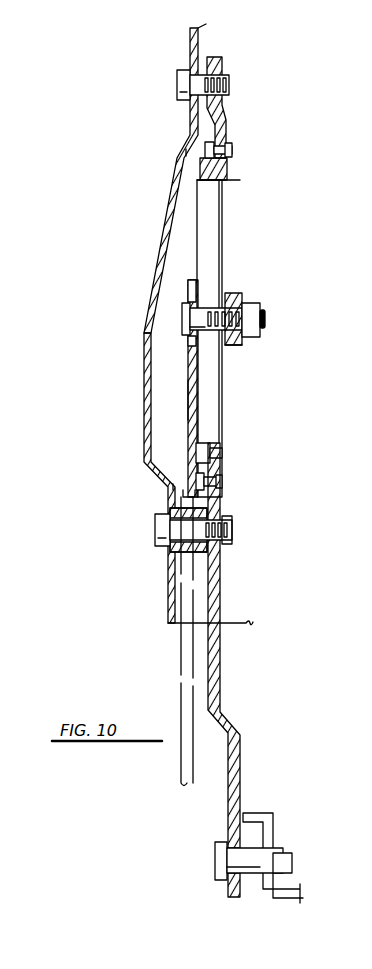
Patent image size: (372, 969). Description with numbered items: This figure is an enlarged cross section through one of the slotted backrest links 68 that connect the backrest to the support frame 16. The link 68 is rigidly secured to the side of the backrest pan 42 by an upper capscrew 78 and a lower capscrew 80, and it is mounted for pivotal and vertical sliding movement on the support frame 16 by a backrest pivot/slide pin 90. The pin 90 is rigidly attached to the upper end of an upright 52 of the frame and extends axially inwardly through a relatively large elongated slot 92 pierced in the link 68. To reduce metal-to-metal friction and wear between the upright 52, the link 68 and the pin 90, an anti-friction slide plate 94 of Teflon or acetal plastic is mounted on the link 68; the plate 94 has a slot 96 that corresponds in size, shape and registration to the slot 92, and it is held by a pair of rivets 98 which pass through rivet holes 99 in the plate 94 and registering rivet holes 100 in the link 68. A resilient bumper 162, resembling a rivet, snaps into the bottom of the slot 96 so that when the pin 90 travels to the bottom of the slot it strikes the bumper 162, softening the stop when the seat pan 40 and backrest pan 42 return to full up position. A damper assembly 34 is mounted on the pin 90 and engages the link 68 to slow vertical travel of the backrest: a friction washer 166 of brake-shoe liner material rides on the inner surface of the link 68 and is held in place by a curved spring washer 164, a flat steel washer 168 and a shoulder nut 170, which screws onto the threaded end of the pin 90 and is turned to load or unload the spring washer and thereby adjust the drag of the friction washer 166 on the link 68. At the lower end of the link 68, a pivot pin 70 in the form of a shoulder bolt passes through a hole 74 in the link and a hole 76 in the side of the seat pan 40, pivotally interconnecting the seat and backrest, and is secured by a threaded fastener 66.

The support frame 16 is at (187, 358).
The damper assembly 34 is at (272, 318).
The seat pan 40 is at (302, 900).
The backrest pan 42 is at (142, 427).
The upright 52 is at (183, 395).
The threaded fastener 66 is at (280, 848).
The slotted backrest link 68 is at (218, 668).
The pivot pin 70 is at (215, 848).
The hole 74 is at (218, 860).
The hole 76 is at (293, 865).
The upper capscrew 78 is at (230, 84).
The lower capscrew 80 is at (233, 531).
The backrest pivot/slide pin 90 is at (208, 300).
The slot 92 is at (218, 177).
The anti-friction slide plate 94 is at (196, 210).
The slot 96 is at (218, 213).
The rivet 98 is at (230, 148).
The rivet hole 99 is at (190, 152).
The rivet hole 100 is at (231, 152).
The resilient bumper 162 is at (210, 444).
The curved spring washer 164 is at (243, 345).
The friction washer 166 is at (233, 303).
The flat steel washer 168 is at (243, 296).
The shoulder nut 170 is at (250, 340).